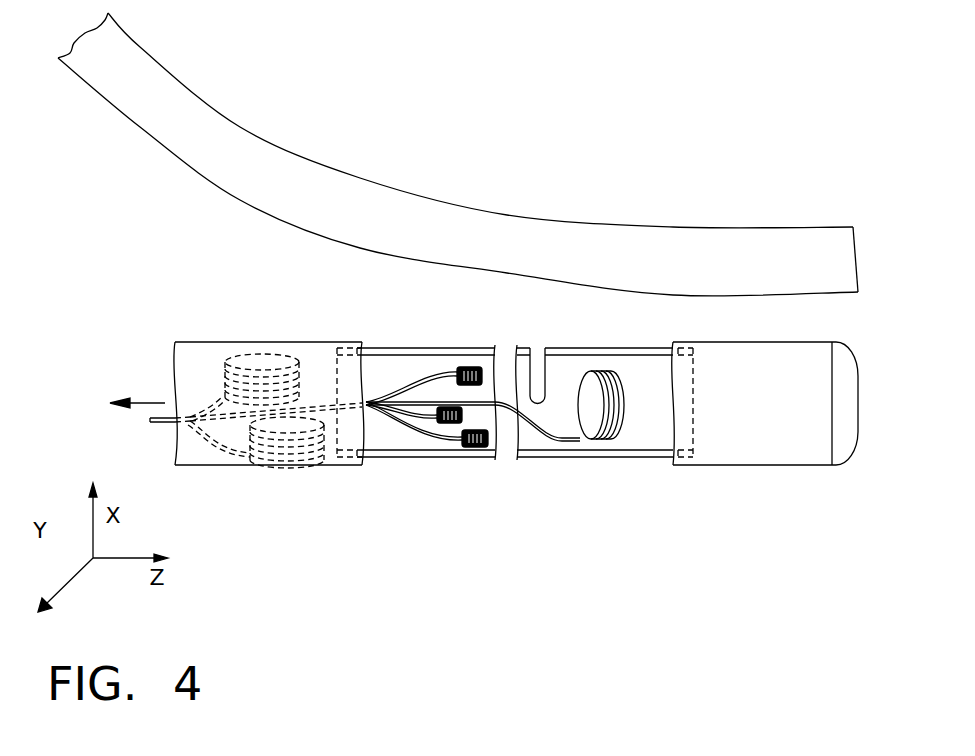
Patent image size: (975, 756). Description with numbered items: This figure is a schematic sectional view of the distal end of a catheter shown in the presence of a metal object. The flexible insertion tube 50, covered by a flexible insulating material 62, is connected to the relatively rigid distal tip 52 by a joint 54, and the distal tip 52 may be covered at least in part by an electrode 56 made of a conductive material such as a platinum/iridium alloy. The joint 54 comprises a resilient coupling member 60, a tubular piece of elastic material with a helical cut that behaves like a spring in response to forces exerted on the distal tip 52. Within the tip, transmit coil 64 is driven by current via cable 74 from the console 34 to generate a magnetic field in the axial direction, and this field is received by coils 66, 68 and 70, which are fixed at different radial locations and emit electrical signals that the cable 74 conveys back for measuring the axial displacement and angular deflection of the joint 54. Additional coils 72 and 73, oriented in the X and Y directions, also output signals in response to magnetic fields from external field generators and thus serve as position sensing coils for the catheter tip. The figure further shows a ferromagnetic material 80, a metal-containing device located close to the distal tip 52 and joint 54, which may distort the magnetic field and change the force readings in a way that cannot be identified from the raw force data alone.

The console 34 is at (107, 379).
The insertion tube 50 is at (252, 342).
The distal tip 52 is at (765, 406).
The joint 54 is at (423, 500).
The electrode 56 is at (845, 433).
The resilient coupling member 60 is at (548, 348).
The flexible insulating material 62 is at (692, 346).
The transmit coil 64 is at (620, 430).
The coil 66 is at (469, 366).
The coil 68 is at (447, 424).
The coil 70 is at (480, 448).
The coil 72 is at (222, 398).
The coil 73 is at (278, 462).
The cable 74 is at (313, 402).
The ferromagnetic material 80 is at (513, 228).